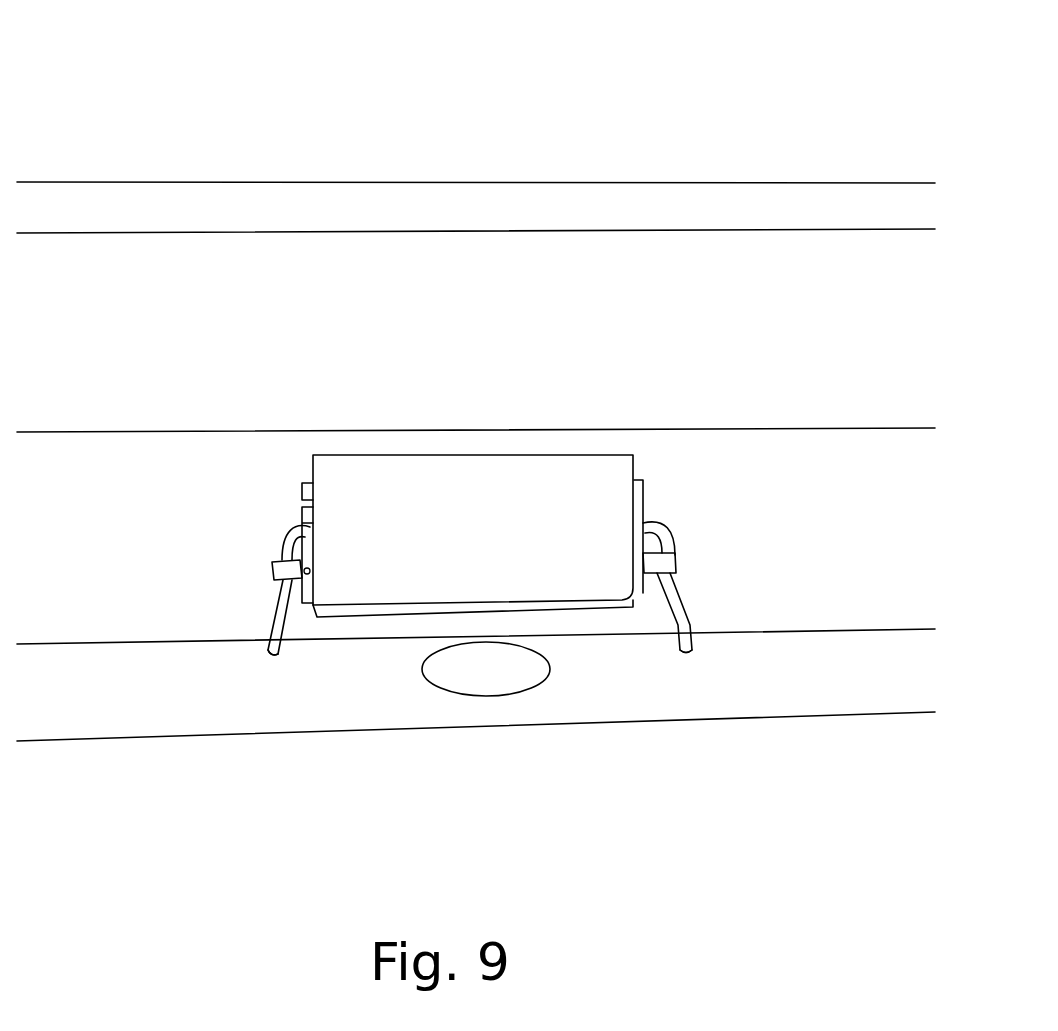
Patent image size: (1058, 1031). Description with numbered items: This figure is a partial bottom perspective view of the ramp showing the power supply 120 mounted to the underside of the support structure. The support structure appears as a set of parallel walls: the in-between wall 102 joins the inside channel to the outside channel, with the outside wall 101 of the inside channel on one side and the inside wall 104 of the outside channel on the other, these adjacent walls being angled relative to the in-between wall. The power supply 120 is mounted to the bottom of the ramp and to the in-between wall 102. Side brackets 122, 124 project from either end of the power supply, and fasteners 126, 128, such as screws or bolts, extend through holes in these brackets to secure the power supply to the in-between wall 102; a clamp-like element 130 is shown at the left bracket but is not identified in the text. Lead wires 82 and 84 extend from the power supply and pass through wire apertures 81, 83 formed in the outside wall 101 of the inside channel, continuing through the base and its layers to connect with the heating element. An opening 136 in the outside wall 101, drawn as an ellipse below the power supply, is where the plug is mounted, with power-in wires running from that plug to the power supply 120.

The outside wall 101 is at (643, 683).
The in-between wall 102 is at (765, 493).
The inside wall 104 is at (563, 277).
The power supply 120 is at (441, 488).
The side bracket 122 is at (643, 490).
The side bracket 124 is at (302, 490).
The fastener 126 is at (300, 507).
The fastener 128 is at (310, 572).
The clamp 130 is at (273, 570).
The opening 136 is at (422, 670).
The wire aperture 81 is at (265, 655).
The lead wire 82 is at (270, 610).
The wire aperture 83 is at (685, 652).
The lead wire 84 is at (678, 607).